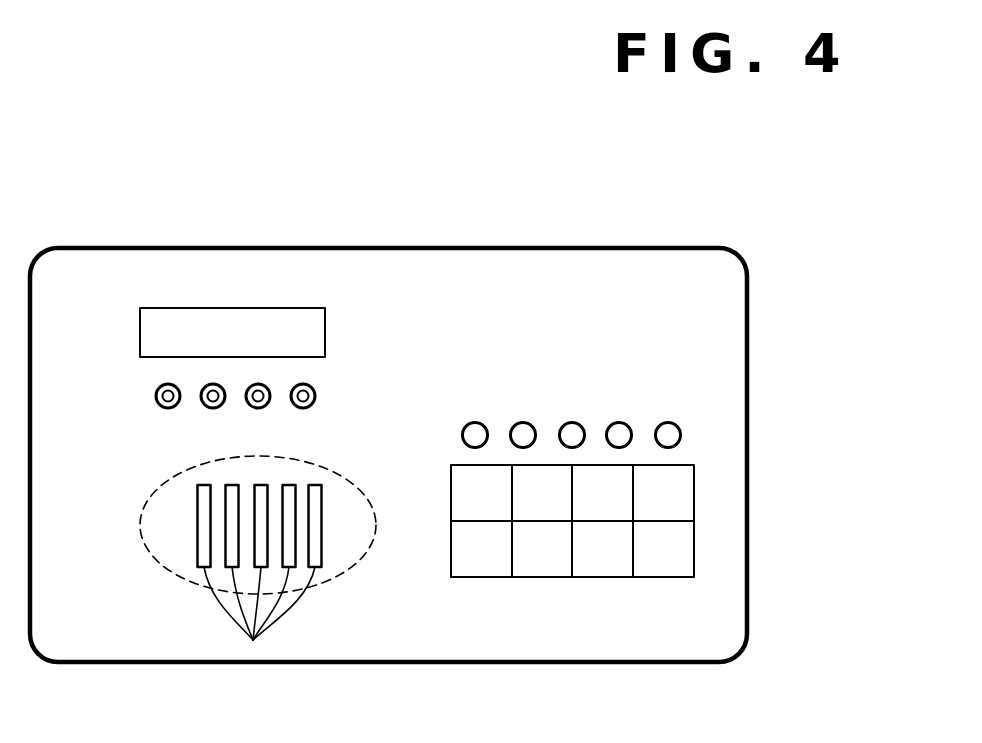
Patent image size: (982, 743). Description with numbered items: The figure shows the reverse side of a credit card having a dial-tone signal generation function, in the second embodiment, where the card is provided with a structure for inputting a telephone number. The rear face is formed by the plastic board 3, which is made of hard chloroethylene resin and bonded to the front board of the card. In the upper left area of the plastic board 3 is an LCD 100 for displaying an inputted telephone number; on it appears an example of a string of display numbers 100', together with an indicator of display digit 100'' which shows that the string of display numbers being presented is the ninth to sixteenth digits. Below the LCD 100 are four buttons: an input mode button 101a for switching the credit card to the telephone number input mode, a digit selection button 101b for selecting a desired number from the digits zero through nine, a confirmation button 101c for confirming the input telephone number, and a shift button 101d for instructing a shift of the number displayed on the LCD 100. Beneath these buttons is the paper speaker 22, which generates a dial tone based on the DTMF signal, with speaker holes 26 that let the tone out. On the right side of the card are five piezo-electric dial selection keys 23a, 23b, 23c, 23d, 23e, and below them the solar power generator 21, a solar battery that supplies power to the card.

The plastic board 3 is at (752, 330).
The LCD 100 is at (232, 271).
The string of display numbers 100' is at (138, 254).
The indicator of display digit 100'' is at (336, 252).
The input mode button 101a is at (156, 407).
The digit selection button 101b is at (204, 407).
The confirmation button 101c is at (262, 409).
The shift button 101d is at (313, 406).
The paper speaker 22 is at (190, 580).
The speaker holes 26 is at (253, 640).
The piezo-electric dial selection key 23a is at (470, 424).
The piezo-electric dial selection key 23b is at (518, 424).
The piezo-electric dial selection key 23c is at (567, 424).
The piezo-electric dial selection key 23d is at (614, 424).
The piezo-electric dial selection key 23e is at (663, 424).
The solar power generator 21 is at (605, 577).